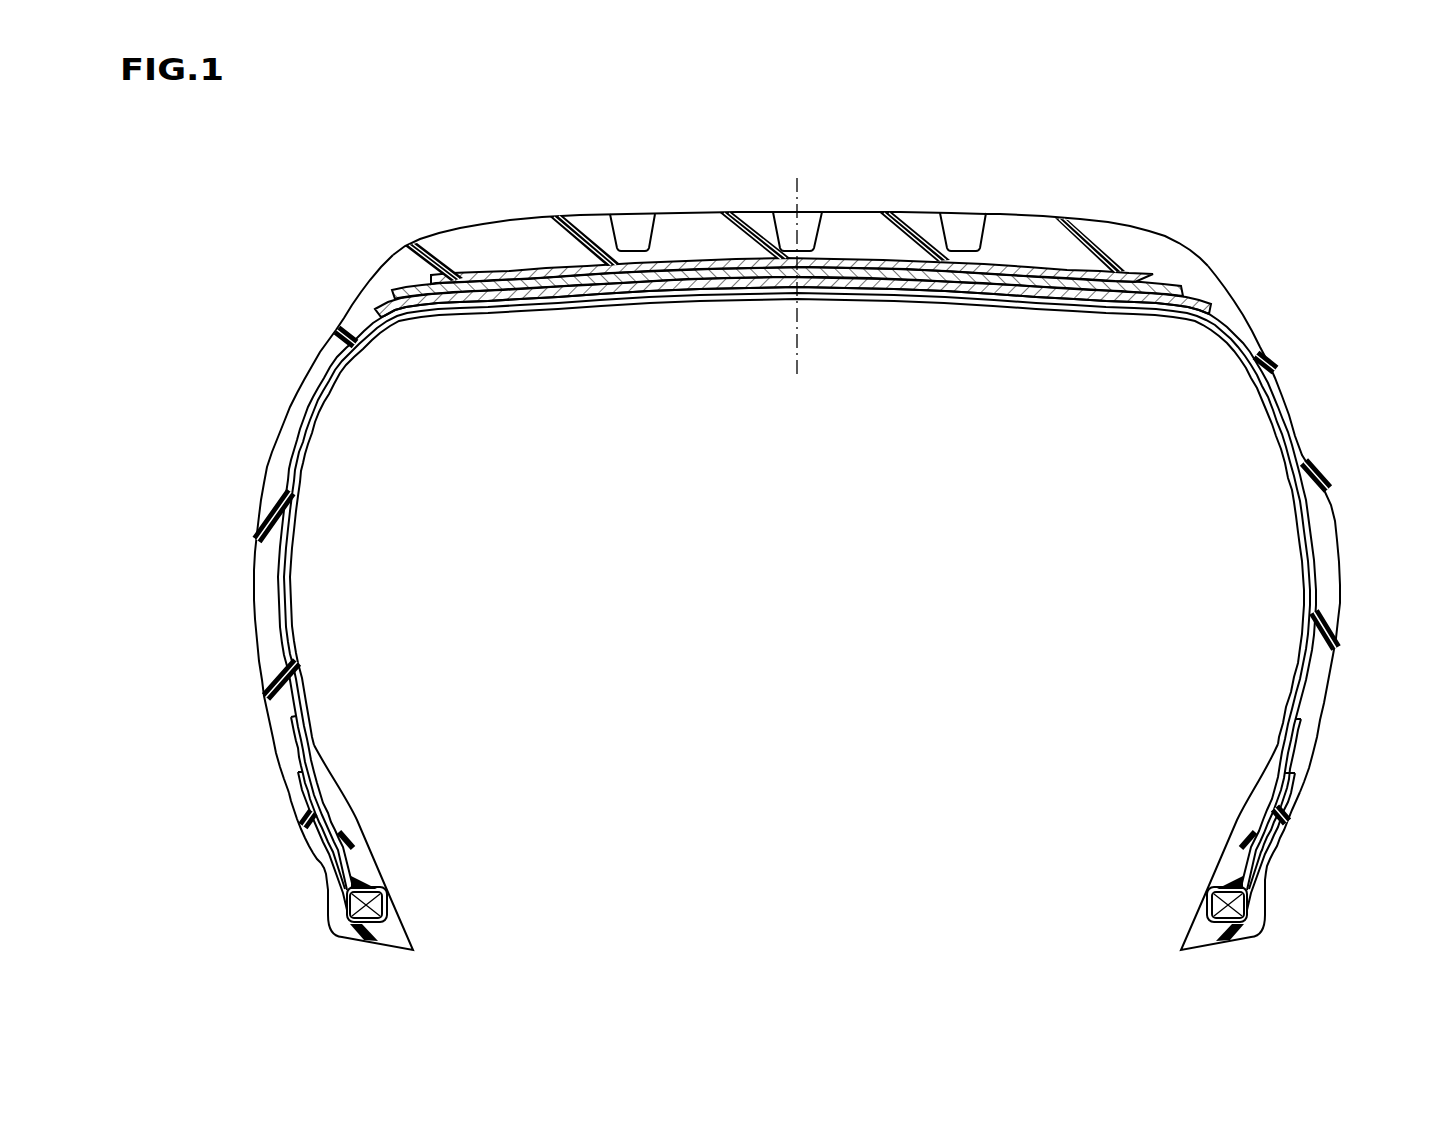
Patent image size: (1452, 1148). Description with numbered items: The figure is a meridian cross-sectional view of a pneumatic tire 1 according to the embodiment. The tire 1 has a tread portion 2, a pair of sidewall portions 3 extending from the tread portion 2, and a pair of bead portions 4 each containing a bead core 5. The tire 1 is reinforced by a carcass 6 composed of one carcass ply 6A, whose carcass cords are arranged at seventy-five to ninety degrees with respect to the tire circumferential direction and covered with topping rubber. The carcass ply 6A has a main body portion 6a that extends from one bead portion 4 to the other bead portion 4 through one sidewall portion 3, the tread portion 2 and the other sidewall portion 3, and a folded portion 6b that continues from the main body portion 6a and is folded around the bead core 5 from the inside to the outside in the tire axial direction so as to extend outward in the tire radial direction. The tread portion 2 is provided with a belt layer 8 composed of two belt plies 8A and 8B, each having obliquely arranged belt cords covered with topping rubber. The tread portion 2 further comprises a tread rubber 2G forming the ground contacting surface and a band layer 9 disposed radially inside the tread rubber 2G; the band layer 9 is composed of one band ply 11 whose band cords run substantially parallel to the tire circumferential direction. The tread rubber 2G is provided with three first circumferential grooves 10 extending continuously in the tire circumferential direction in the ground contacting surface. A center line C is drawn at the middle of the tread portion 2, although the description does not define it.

The pneumatic tire 1 is at (1167, 167).
The tread portion 2 is at (531, 206).
The tread rubber 2G is at (1025, 230).
The sidewall portion 3 is at (230, 543).
The bead portion 4 is at (298, 863).
The bead core 5 is at (380, 906).
The carcass 6 is at (713, 284).
The carcass ply 6A is at (796, 800).
The main body portion 6a is at (1290, 722).
The folded portion 6b is at (796, 841).
The belt layer 8 is at (793, 347).
The belt ply 8A is at (861, 276).
The belt ply 8B is at (843, 378).
The band layer 9 is at (1012, 264).
The first circumferential groove 10 is at (625, 222).
The band ply 11 is at (573, 268).
The tire equator C is at (797, 261).